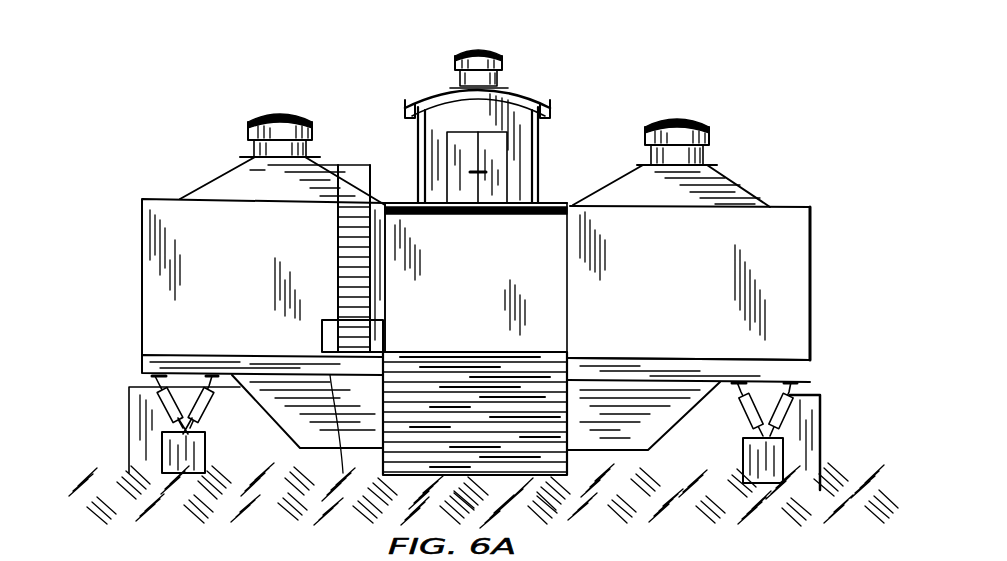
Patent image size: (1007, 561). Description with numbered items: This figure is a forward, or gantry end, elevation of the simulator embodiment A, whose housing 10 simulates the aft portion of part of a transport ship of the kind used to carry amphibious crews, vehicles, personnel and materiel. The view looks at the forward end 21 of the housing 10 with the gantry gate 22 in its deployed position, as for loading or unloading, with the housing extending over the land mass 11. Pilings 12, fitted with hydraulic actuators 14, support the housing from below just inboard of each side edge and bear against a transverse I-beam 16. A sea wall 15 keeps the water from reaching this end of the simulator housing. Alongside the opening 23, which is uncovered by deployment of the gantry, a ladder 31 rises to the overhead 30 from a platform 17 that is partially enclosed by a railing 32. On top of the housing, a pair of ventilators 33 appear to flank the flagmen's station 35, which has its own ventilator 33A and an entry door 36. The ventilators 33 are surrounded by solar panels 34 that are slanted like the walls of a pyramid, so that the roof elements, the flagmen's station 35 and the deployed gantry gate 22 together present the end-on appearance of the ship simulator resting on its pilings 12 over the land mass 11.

The simulator embodiment A is at (147, 135).
The housing 10 is at (147, 288).
The land mass 11 is at (244, 547).
The pilings 12 is at (170, 453).
The hydraulic actuators 14 is at (160, 405).
The sea wall 15 is at (128, 431).
The transverse I-beam 16 is at (142, 363).
The platform 17 is at (343, 473).
The forward end 21 is at (150, 220).
The gantry gate 22 is at (578, 445).
The opening 23 is at (548, 302).
The overhead 30 is at (157, 195).
The ladder 31 is at (338, 265).
The railing 32 is at (320, 332).
The ventilators 33 is at (292, 112).
The ventilator 33A is at (478, 52).
The solar panels 34 is at (212, 175).
The flagmen's station 35 is at (418, 158).
The entry door 36 is at (500, 183).